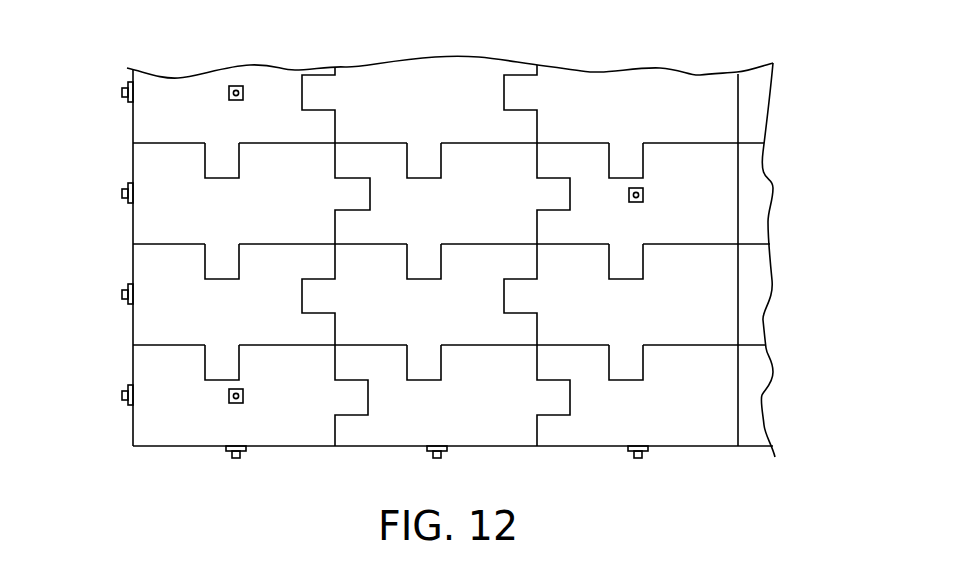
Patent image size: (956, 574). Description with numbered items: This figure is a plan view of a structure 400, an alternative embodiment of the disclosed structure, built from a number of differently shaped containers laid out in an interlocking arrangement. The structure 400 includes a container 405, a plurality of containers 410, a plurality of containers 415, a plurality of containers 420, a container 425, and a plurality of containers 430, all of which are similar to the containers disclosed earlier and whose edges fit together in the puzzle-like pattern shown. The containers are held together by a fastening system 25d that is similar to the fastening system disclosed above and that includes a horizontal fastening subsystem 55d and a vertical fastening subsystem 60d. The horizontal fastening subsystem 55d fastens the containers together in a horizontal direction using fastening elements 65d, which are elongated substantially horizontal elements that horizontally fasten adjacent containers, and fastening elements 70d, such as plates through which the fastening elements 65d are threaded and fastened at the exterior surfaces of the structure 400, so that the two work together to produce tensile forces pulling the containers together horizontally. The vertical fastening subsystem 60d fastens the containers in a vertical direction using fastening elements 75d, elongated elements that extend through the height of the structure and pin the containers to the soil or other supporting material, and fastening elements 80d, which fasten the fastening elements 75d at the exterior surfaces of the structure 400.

The structure 400 is at (570, 42).
The container 405 is at (193, 430).
The containers 410 is at (753, 390).
The containers 415 is at (187, 108).
The containers 420 is at (388, 105).
The container 425 is at (197, 198).
The containers 430 is at (447, 203).
The vertical fastening subsystem 60d is at (110, 180).
The fastening elements 65d is at (120, 193).
The fastening elements 70d is at (128, 200).
The fastening elements 75d is at (230, 396).
The fastening elements 80d is at (240, 400).
The fastening system 25d is at (108, 477).
The horizontal fastening subsystem 55d is at (165, 478).